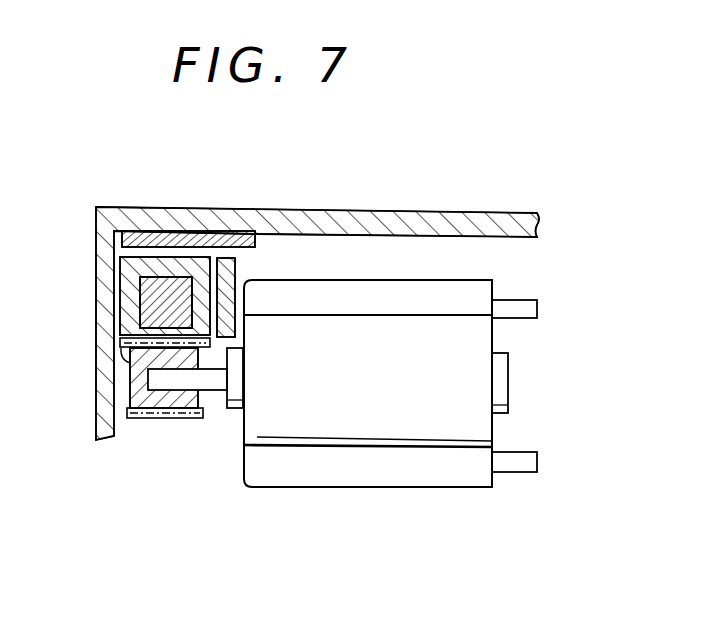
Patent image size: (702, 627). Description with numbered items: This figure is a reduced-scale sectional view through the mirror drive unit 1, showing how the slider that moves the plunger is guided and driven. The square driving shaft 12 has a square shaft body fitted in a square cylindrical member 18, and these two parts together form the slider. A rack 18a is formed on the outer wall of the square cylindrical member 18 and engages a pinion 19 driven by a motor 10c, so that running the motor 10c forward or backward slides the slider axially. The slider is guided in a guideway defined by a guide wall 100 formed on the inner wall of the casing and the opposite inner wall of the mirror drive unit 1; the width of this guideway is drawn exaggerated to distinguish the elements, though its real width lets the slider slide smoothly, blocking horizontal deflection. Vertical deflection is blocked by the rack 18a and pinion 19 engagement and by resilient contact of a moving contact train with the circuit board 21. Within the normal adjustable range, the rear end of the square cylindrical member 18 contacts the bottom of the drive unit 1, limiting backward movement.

The mirror drive unit 1 is at (308, 223).
The circuit board 21 is at (163, 237).
The guide wall 100 is at (226, 257).
The square cylindrical member 18 is at (135, 272).
The square driving shaft 12 is at (162, 303).
The rack 18a is at (123, 343).
The pinion 19 is at (167, 420).
The motor 10c is at (318, 460).